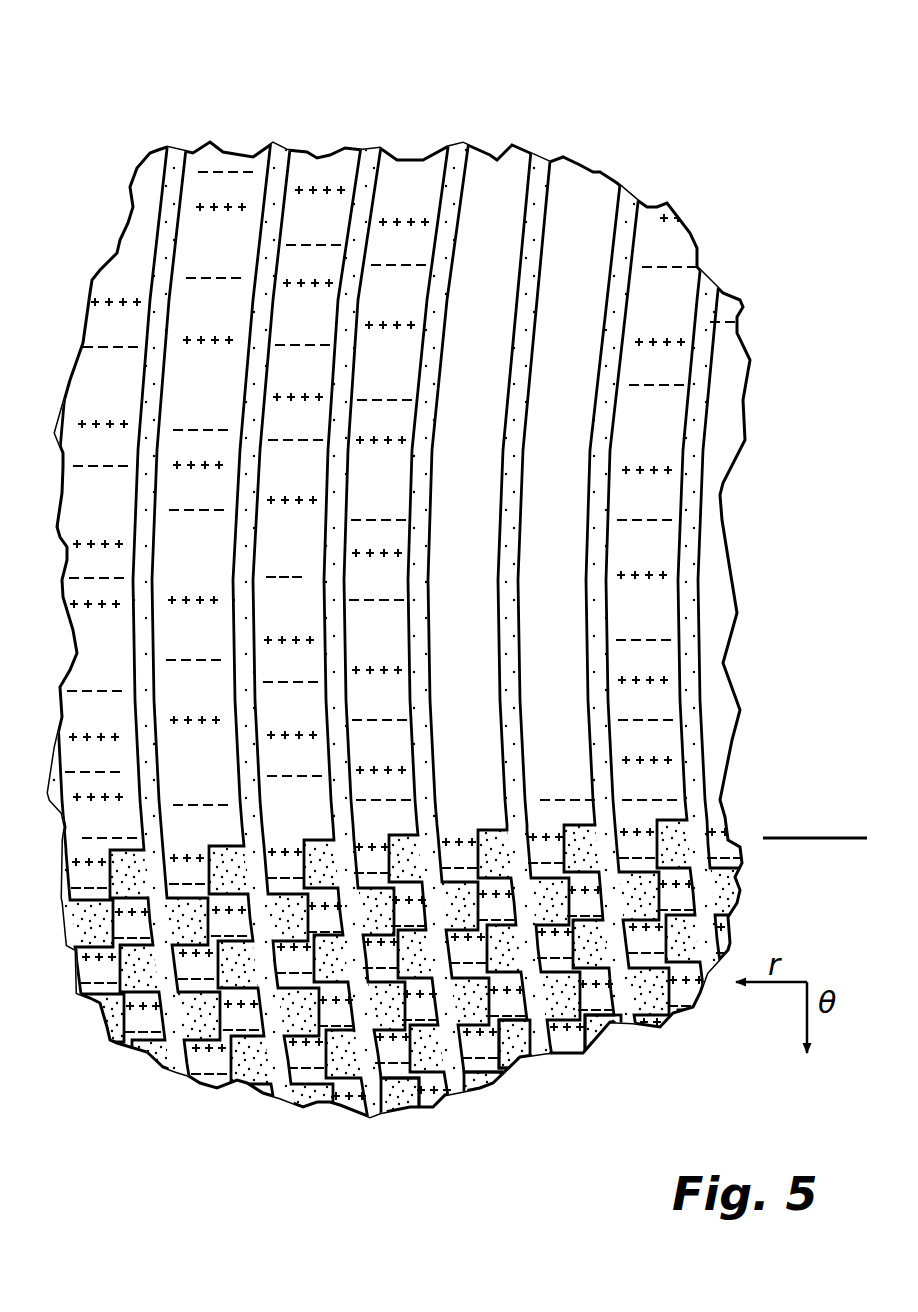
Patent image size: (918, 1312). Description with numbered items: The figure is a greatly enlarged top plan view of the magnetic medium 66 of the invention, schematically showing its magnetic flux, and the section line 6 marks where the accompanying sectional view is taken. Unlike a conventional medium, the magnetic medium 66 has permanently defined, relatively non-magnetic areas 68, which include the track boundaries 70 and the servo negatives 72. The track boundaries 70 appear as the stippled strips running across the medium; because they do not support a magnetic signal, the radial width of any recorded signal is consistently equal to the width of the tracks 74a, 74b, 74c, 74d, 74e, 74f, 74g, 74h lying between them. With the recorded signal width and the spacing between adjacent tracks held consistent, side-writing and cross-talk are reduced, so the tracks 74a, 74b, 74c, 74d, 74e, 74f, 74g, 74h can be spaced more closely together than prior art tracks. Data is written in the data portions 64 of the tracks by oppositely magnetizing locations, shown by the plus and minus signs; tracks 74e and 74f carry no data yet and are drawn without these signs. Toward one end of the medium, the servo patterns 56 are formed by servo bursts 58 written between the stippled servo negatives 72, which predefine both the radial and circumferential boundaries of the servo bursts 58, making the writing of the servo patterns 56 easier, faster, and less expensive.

The magnetic medium 66 is at (127, 75).
The track 74a is at (128, 245).
The track 74b is at (218, 178).
The track 74c is at (300, 165).
The track 74d is at (398, 160).
The track 74e is at (500, 158).
The track 74f is at (580, 150).
The track 74g is at (670, 232).
The track 74h is at (727, 327).
The track boundary 70 is at (452, 158).
The non-magnetic area 68 is at (538, 165).
The servo burst 58 is at (565, 1035).
The servo negative 72 is at (462, 1090).
The data portion 64 is at (782, 792).
The servo pattern 56 is at (802, 838).
The section line 6- 6 is at (352, 577).